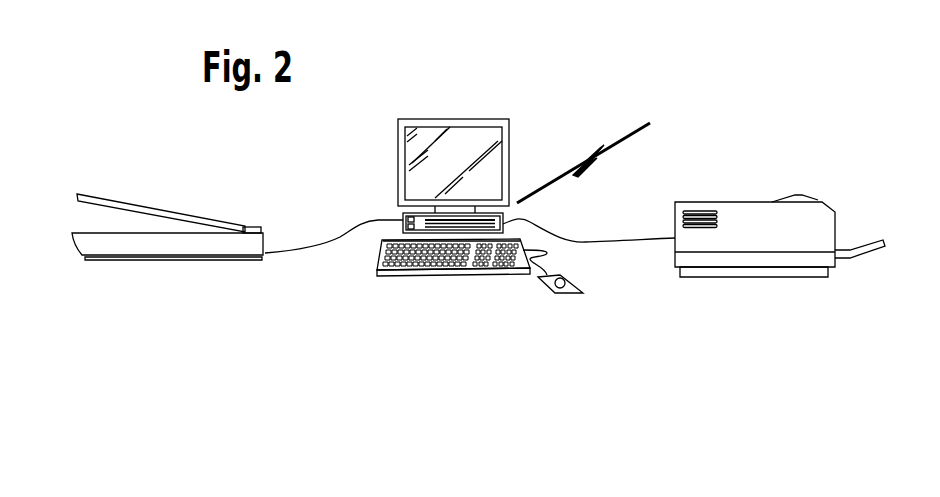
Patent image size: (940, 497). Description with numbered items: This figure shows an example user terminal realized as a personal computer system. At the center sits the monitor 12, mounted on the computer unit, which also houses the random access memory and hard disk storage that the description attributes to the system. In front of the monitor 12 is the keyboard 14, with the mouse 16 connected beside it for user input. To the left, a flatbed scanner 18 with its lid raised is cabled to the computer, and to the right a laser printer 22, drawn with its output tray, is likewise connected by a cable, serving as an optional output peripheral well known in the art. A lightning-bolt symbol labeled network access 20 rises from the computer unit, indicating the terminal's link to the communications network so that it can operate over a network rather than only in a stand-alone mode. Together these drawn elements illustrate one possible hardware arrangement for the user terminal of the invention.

The monitor 12 is at (415, 173).
The keyboard 14 is at (432, 268).
The mouse 16 is at (563, 295).
The scanner 18 is at (185, 248).
The network access 20 is at (613, 150).
The laser printer 22 is at (725, 277).